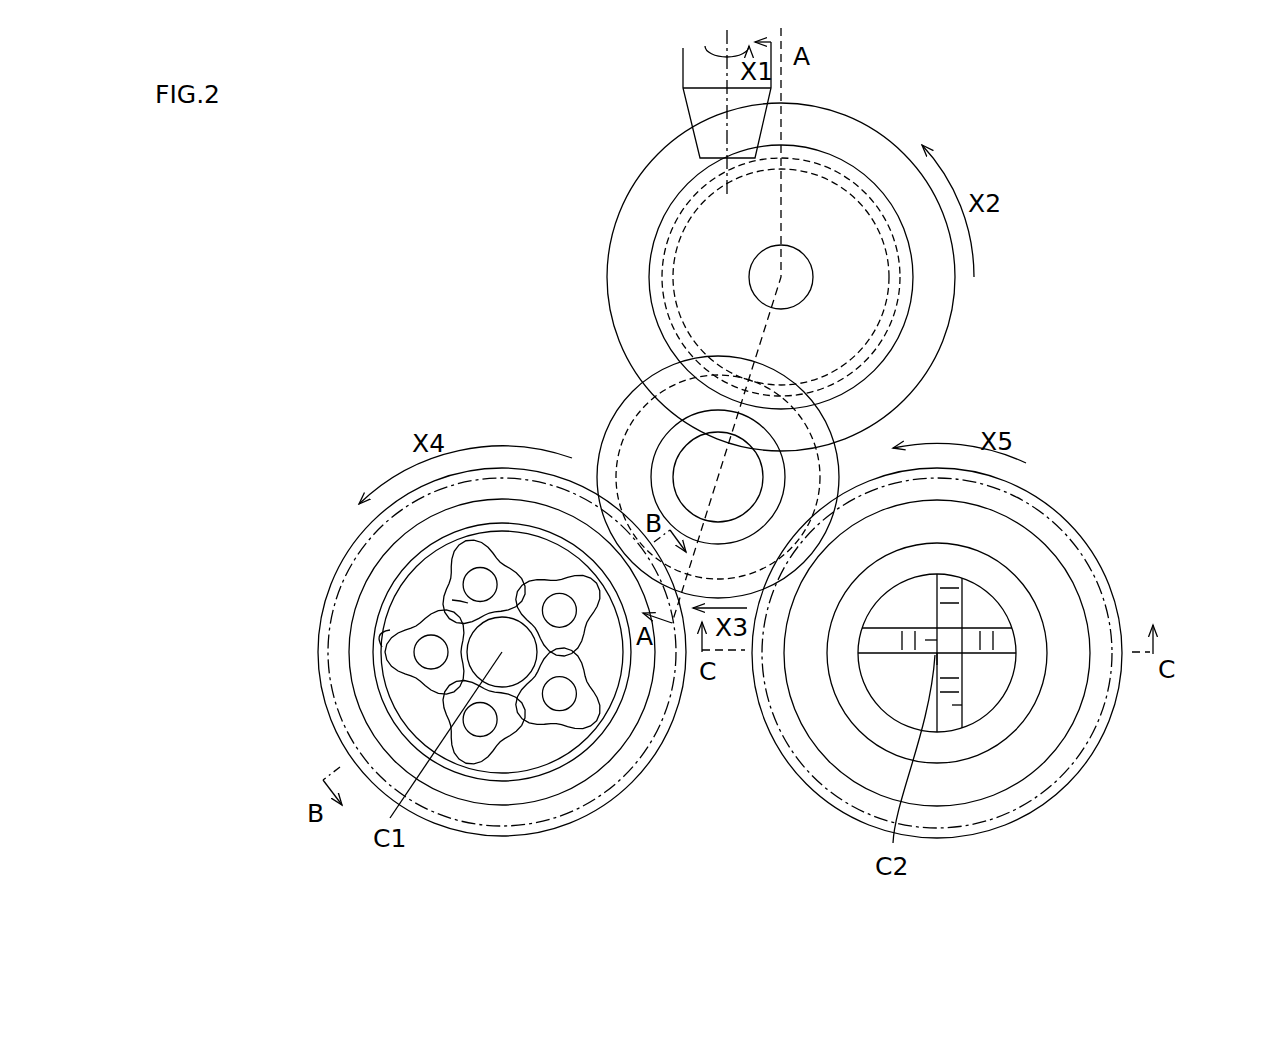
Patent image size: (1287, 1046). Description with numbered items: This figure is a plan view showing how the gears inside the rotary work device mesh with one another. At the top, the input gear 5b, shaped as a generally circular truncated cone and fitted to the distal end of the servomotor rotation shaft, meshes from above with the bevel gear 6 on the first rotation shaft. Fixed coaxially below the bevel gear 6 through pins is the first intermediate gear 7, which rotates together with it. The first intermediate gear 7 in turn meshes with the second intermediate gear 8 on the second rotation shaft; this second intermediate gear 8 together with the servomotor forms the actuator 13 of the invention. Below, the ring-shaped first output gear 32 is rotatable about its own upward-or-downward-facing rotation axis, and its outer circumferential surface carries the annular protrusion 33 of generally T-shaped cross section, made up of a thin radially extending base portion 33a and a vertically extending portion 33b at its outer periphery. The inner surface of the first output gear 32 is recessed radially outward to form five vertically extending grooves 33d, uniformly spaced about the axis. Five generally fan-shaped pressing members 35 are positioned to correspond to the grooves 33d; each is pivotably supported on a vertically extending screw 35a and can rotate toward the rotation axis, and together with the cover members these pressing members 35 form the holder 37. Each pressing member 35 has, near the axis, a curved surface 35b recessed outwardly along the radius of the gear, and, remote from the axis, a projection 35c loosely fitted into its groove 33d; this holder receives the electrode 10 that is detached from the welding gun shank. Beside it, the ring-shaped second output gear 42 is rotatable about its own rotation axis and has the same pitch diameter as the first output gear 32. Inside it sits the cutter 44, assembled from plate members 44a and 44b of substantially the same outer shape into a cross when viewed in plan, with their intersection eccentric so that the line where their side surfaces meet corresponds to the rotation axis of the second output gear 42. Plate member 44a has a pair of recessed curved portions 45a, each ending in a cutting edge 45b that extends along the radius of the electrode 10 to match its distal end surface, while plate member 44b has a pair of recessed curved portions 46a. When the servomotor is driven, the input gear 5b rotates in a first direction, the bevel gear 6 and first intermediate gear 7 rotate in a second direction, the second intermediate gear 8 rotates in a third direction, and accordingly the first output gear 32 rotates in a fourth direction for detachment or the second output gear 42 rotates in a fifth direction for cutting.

The input gear 5b is at (683, 66).
The bevel gear 6 is at (873, 127).
The first intermediate gear 7 is at (897, 308).
The second intermediate gear 8 is at (672, 477).
The actuator 13 is at (612, 418).
The electrode 10 is at (513, 688).
The first output gear 32 is at (640, 778).
The annular protrusion 33 is at (434, 652).
The base portion 33a is at (373, 724).
The extending portion 33b is at (327, 720).
The grooves 33d is at (382, 647).
The pressing members 35 is at (423, 633).
The screw 35a is at (428, 648).
The curved surface 35b is at (468, 603).
The projection 35c is at (382, 660).
The holder 37 is at (485, 758).
The second output gear 42 is at (1077, 527).
The cutter 44 is at (1056, 637).
The plate member 44a is at (977, 617).
The plate member 44b is at (963, 672).
The curved portions 45a is at (925, 640).
The cutting edge 45b is at (937, 653).
The curved portions 46a is at (952, 705).